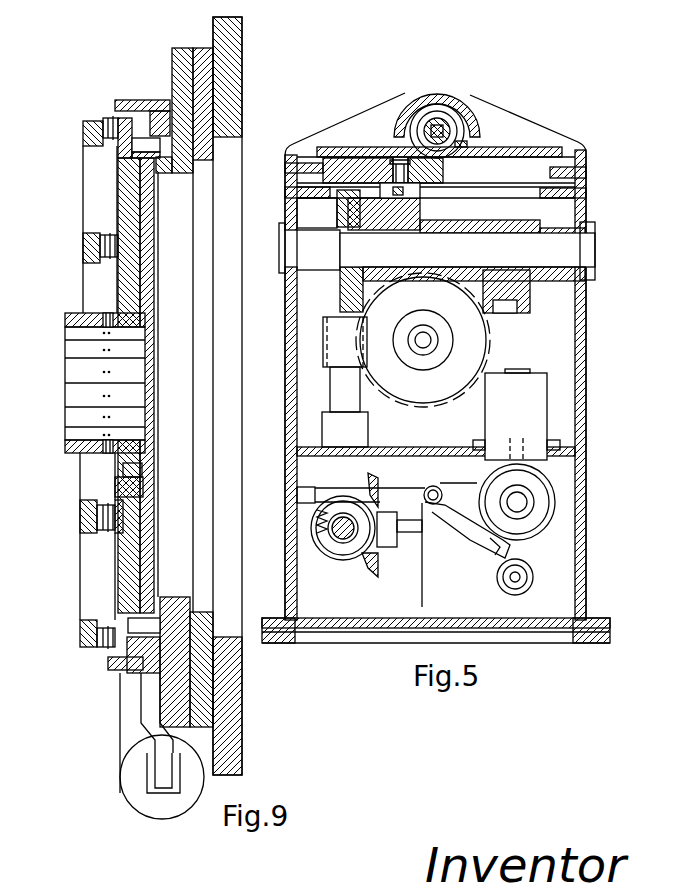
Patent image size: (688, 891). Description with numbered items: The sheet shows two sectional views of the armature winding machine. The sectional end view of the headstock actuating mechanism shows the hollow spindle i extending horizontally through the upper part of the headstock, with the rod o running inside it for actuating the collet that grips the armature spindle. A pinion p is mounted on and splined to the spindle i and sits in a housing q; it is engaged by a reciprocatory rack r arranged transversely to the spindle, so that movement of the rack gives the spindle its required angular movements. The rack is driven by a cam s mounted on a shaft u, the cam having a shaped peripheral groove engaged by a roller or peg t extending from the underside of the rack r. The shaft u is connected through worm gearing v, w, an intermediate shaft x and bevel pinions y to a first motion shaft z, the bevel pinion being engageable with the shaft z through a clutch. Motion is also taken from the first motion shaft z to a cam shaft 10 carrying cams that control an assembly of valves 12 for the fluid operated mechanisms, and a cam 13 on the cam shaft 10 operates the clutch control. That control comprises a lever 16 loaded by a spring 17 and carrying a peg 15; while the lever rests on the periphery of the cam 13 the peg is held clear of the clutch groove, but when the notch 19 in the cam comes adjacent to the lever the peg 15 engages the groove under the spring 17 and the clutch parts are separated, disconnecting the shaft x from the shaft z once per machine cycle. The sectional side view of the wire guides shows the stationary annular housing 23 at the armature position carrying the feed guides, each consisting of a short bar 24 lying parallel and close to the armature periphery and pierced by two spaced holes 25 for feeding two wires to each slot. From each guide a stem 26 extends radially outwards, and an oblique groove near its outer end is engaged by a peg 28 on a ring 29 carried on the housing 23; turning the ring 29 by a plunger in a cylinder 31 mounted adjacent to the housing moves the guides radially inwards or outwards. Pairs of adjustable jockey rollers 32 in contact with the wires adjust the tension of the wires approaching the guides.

In FIG. 9, the annular housing 23 is at (176, 168).
In FIG. 9, the bar 24 is at (78, 368).
In FIG. 9, the holes 25 is at (102, 397).
In FIG. 9, the stem 26 is at (136, 233).
In FIG. 9, the peg 28 is at (140, 152).
In FIG. 9, the ring 29 is at (150, 115).
In FIG. 9, the cylinder 31 is at (143, 806).
In FIG. 9, the jockey rollers 32 is at (110, 125).
In FIG. 5, the cam shaft 10 is at (520, 502).
In FIG. 5, the valves 12 is at (516, 415).
In FIG. 5, the cam 13 is at (528, 535).
In FIG. 5, the peg 15 is at (352, 500).
In FIG. 5, the lever 16 is at (318, 492).
In FIG. 5, the spring 17 is at (325, 533).
In FIG. 5, the notch 19 is at (530, 480).
In FIG. 5, the housing q is at (433, 109).
In FIG. 5, the pinion p is at (445, 122).
In FIG. 5, the rod o is at (424, 131).
In FIG. 5, the hollow spindle i is at (447, 137).
In FIG. 5, the rack r is at (353, 148).
In FIG. 5, the roller or peg t is at (418, 222).
In FIG. 5, the shaft u is at (566, 258).
In FIG. 5, the worm gearing v is at (330, 272).
In FIG. 5, the worm gearing w is at (326, 362).
In FIG. 5, the intermediate shaft x is at (356, 398).
In FIG. 5, the cam s is at (520, 300).
In FIG. 5, the bevel pinions y is at (368, 577).
In FIG. 5, the first motion shaft z is at (343, 535).